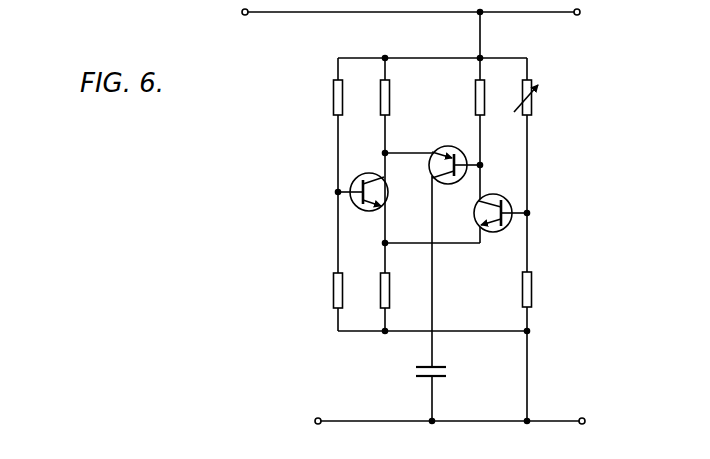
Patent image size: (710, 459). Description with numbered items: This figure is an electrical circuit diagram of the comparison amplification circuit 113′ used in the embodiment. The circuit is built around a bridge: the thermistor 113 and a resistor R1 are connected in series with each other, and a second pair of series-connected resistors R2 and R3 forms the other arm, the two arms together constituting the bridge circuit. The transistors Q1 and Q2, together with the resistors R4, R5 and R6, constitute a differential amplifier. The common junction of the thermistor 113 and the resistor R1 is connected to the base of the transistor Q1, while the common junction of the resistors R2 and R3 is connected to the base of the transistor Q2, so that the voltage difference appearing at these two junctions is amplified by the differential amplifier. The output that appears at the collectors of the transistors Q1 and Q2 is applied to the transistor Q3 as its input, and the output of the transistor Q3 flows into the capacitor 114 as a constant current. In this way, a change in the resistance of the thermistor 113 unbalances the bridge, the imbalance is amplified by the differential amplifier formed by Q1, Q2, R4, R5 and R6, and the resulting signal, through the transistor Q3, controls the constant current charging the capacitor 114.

The thermistor 113 is at (334, 88).
The comparison amplification circuit 113′ is at (558, 146).
The capacitor 114 is at (442, 368).
The resistor R1 is at (334, 280).
The resistor R2 is at (534, 96).
The resistor R3 is at (532, 288).
The resistor R4 is at (390, 92).
The resistor R5 is at (475, 92).
The resistor R6 is at (390, 280).
The transistor Q1 is at (368, 172).
The transistor Q2 is at (497, 233).
The transistor Q3 is at (450, 147).